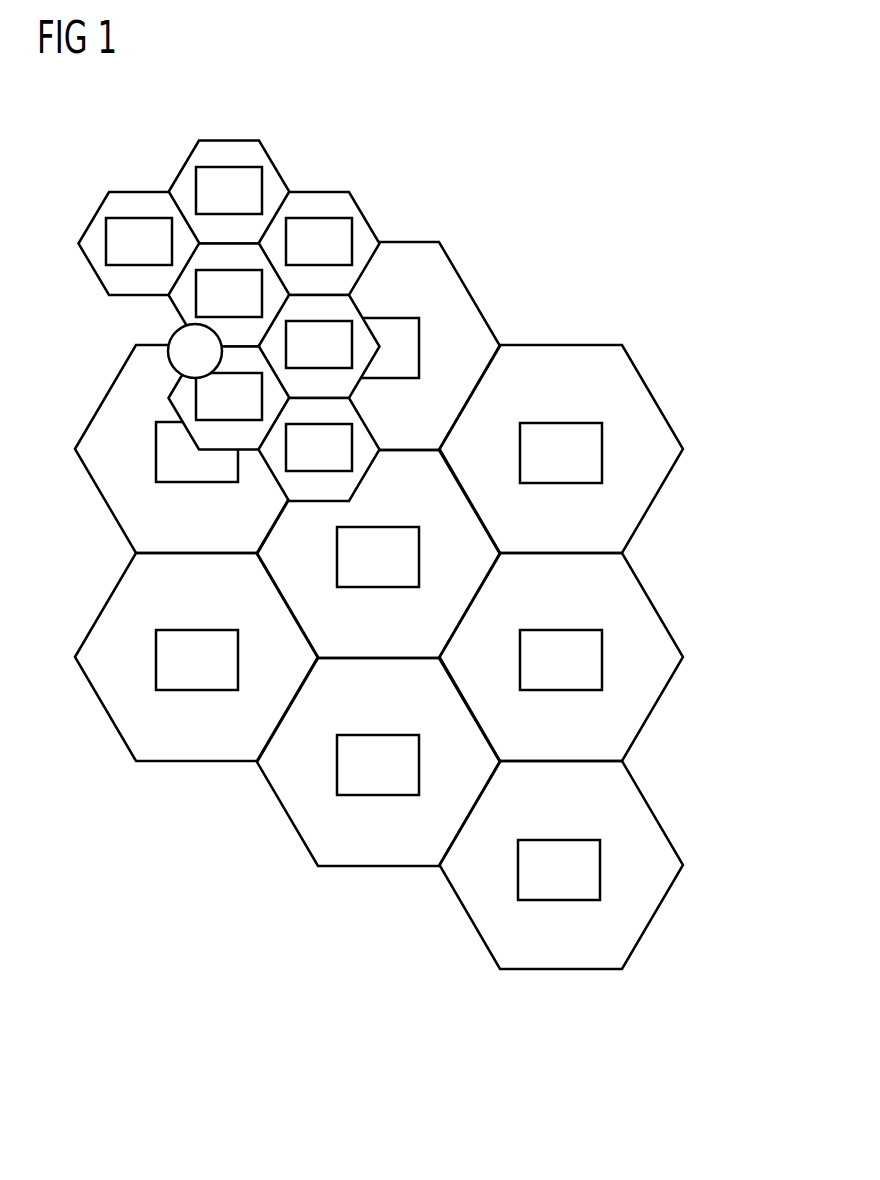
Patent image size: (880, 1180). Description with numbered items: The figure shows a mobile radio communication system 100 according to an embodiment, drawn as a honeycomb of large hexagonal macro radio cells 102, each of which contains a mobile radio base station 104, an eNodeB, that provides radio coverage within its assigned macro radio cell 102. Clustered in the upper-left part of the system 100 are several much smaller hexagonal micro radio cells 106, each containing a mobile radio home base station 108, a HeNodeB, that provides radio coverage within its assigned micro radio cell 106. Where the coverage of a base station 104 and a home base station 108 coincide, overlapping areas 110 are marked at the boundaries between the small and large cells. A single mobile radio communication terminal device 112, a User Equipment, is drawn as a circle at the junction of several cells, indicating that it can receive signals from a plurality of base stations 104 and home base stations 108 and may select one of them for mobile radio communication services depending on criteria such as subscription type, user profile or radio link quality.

The communication system 100 is at (547, 186).
The macro radio cell 102 is at (400, 241).
The mobile radio base station 104 is at (197, 483).
The micro radio cell 106 is at (222, 139).
The mobile radio home base station 108 is at (242, 167).
The overlapping area 110 is at (357, 380).
The mobile radio communication terminal device 112 is at (168, 366).